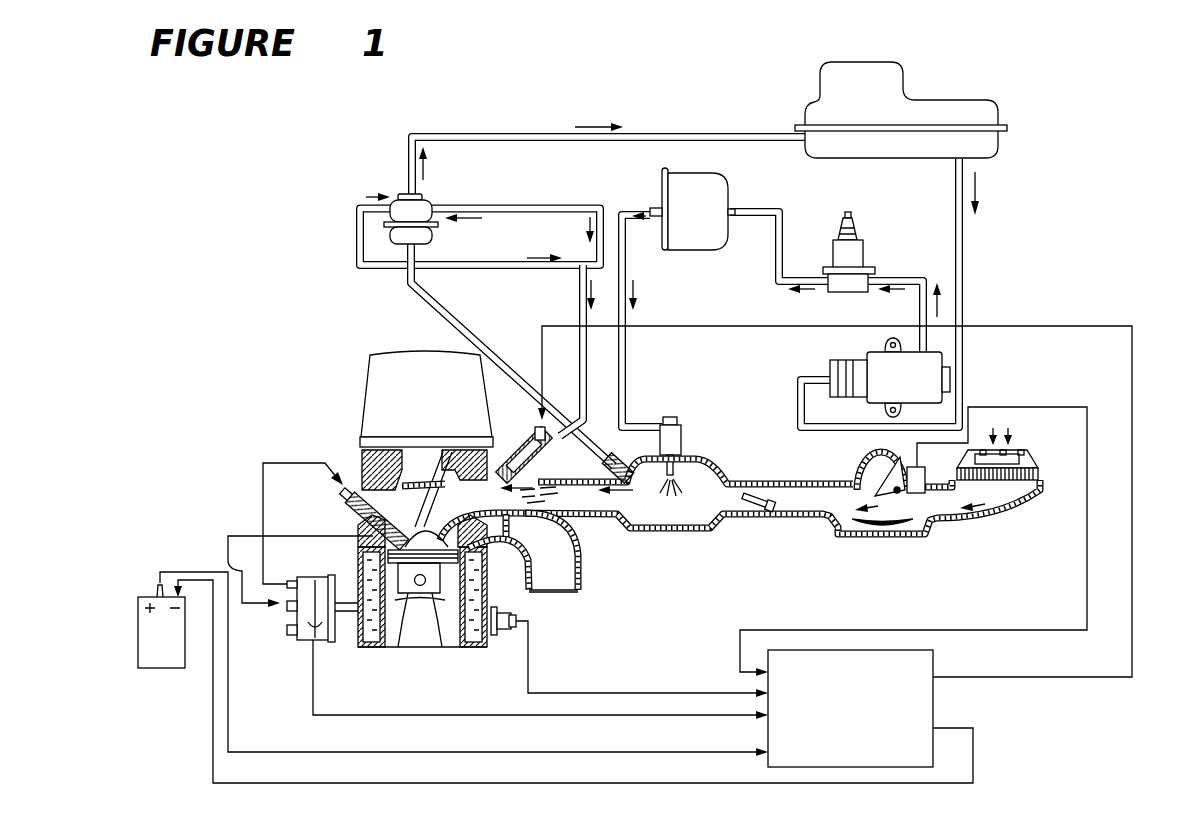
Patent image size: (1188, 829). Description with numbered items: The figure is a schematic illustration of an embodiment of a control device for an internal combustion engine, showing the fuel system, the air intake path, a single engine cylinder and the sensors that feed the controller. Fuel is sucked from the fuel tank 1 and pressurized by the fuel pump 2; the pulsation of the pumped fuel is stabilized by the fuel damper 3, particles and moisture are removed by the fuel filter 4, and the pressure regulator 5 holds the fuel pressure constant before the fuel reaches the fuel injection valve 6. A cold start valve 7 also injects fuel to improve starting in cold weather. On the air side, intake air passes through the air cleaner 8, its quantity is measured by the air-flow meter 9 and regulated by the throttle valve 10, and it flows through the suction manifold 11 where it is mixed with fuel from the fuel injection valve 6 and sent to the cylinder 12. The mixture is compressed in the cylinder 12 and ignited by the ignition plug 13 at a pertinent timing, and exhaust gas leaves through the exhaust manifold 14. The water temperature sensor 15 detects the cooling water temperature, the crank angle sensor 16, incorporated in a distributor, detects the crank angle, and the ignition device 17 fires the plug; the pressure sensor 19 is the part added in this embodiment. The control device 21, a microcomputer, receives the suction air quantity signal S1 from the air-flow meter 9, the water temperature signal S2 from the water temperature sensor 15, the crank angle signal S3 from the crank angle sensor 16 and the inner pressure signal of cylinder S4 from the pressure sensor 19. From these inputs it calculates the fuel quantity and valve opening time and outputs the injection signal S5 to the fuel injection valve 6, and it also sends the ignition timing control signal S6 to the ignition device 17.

The fuel tank 1 is at (908, 85).
The fuel pump 2 is at (856, 358).
The fuel damper 3 is at (855, 250).
The fuel filter 4 is at (705, 190).
The pressure regulator 5 is at (433, 234).
The fuel injection valve 6 is at (516, 438).
The cold start valve 7 is at (672, 417).
The air cleaner 8 is at (1000, 485).
The air-flow meter 9 is at (872, 463).
The throttle valve 10 is at (762, 494).
The suction manifold 11 is at (700, 492).
The cylinder 12 is at (523, 553).
The ignition plug 13 is at (341, 481).
The exhaust manifold 14 is at (553, 576).
The water temperature sensor 15 is at (508, 631).
The crank angle sensor 16 is at (322, 641).
The ignition device 17 is at (138, 632).
The pressure sensor 19 is at (370, 538).
The control device 21 is at (935, 701).
The suction air quantity signal S1 is at (740, 656).
The water temperature signal S2 is at (530, 655).
The crank angle signal S3 is at (425, 712).
The inner pressure signal of cylinder S4 is at (302, 752).
The injection signal S5 is at (1153, 569).
The ignition timing control signal S6 is at (973, 753).